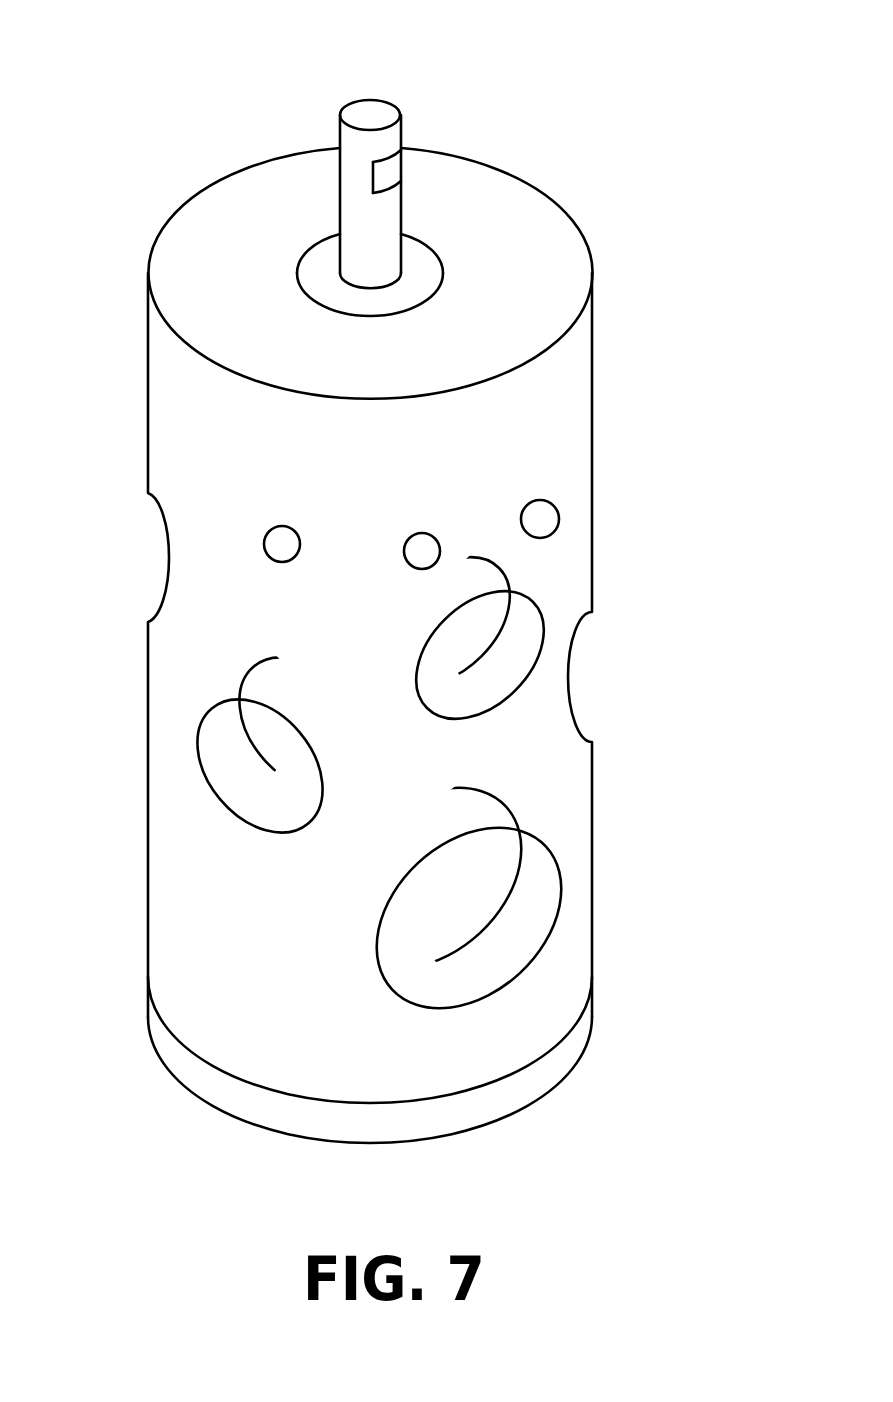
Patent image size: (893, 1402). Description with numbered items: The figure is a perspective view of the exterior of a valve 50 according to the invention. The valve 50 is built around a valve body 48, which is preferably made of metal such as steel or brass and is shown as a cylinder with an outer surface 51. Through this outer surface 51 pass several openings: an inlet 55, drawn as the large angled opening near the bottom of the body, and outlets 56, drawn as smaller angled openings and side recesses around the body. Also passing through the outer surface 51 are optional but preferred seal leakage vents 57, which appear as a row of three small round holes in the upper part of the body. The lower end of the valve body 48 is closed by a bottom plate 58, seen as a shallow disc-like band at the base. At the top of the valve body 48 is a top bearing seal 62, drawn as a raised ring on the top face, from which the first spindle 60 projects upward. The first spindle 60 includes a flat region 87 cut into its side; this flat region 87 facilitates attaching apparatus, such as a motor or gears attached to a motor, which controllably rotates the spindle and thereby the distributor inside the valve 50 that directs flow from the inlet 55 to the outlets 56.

The valve body 48 is at (201, 284).
The valve 50 is at (413, 574).
The outer surface 51 is at (188, 448).
The inlet 55 is at (485, 972).
The outlets 56 is at (480, 688).
The seal leakage vents 57 is at (299, 536).
The bottom plate 58 is at (372, 1134).
The first spindle 60 is at (439, 146).
The top bearing seal 62 is at (428, 267).
The flat region 87 is at (393, 170).